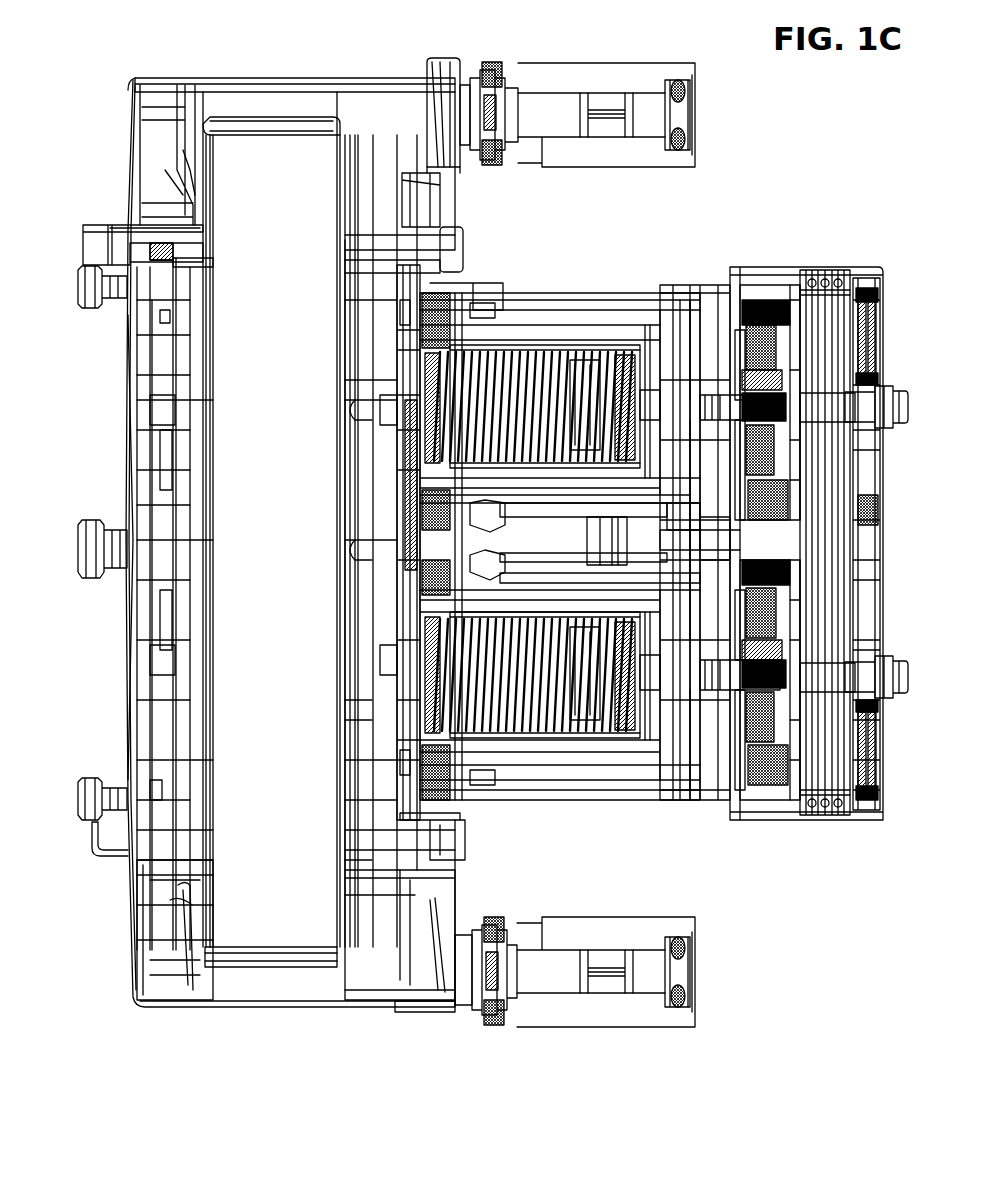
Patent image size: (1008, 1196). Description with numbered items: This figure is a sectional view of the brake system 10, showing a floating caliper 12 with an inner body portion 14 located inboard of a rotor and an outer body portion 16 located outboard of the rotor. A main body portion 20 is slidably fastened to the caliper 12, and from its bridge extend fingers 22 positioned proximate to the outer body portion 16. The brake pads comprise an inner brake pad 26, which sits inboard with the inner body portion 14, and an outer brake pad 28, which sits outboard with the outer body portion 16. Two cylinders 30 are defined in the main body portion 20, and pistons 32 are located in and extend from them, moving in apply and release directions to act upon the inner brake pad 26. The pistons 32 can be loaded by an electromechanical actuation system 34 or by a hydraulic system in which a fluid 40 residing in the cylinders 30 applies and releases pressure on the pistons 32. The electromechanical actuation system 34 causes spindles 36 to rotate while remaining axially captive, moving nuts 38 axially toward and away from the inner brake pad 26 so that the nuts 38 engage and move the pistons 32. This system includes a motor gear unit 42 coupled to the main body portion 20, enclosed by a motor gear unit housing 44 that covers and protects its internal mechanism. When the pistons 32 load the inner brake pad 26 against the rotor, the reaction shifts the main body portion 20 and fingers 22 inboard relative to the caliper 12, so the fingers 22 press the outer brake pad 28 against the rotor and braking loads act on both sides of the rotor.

The brake system 10 is at (750, 929).
The caliper 12 is at (122, 935).
The inner body portion 14 is at (393, 195).
The outer body portion 16 is at (165, 165).
The main body portion 20 is at (633, 785).
The fingers 22 is at (80, 287).
The inner brake pad 26 is at (352, 688).
The outer brake pad 28 is at (208, 740).
The cylinders 30 is at (510, 310).
The pistons 32 is at (410, 348).
The electromechanical actuation system 34 is at (760, 262).
The spindles 36 is at (555, 350).
The nuts 38 is at (490, 340).
The fluid 40 is at (527, 338).
The motor gear unit 42 is at (795, 264).
The motor gear unit housing 44 is at (887, 278).